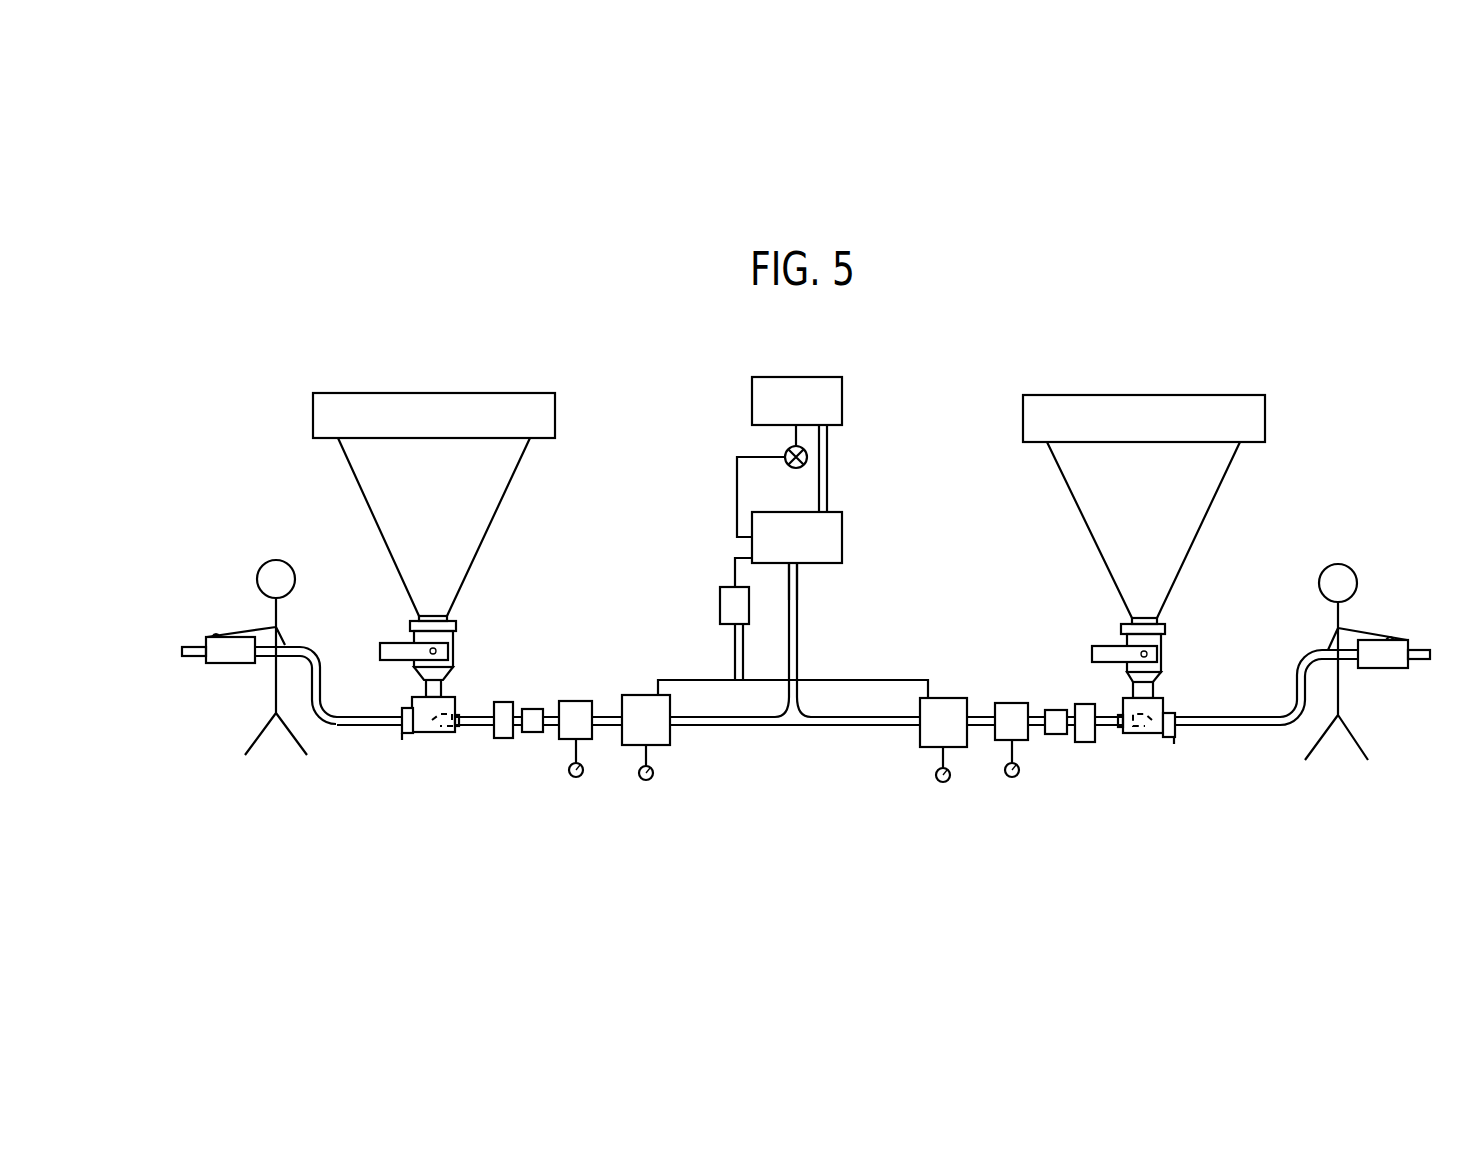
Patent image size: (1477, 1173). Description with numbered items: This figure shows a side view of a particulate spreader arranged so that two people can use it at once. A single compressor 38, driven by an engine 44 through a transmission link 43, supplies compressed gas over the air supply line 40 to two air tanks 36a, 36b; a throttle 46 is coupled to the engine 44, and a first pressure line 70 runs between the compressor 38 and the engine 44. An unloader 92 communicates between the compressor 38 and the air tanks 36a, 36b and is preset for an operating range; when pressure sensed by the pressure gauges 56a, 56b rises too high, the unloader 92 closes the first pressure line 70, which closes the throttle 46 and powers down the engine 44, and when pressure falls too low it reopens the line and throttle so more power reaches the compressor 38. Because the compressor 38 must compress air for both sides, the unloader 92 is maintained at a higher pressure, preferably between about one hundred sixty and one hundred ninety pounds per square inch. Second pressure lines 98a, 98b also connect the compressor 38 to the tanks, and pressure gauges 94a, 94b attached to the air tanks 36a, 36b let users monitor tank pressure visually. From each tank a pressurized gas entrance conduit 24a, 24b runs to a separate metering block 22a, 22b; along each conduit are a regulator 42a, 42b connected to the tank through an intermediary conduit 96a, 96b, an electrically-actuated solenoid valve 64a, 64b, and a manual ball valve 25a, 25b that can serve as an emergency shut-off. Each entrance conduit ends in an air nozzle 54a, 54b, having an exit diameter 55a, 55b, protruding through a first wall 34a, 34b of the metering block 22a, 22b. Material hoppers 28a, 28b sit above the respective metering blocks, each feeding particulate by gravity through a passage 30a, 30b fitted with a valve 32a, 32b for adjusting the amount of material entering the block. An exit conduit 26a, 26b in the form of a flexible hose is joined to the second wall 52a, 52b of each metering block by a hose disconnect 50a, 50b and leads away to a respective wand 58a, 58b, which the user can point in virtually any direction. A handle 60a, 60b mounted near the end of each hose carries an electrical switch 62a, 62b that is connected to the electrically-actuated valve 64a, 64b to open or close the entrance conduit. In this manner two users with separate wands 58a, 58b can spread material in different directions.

The metering block 22a is at (1160, 698).
The metering block 22b is at (430, 698).
The pressurized gas entrance conduit 24a is at (1088, 745).
The pressurized gas entrance conduit 24b is at (503, 740).
The ball valve 25a is at (1057, 734).
The ball valve 25b is at (530, 734).
The exit conduit 26a is at (1178, 736).
The exit conduit 26b is at (399, 733).
The material hopper 28a is at (1187, 538).
The material hopper 28b is at (483, 508).
The passage 30a is at (1162, 645).
The passage 30b is at (457, 637).
The valve 32a is at (1093, 650).
The valve 32b is at (405, 648).
The first wall 34a is at (1125, 700).
The first wall 34b is at (456, 700).
The air tank 36a is at (942, 698).
The air tank 36b is at (647, 695).
The compressor 38 is at (833, 552).
The air supply line 40 is at (797, 613).
The regulator 42a is at (1012, 703).
The regulator 42b is at (575, 700).
The transmission link 43 is at (827, 480).
The engine 44 is at (835, 403).
The throttle 46 is at (785, 452).
The hose disconnect 50a is at (1170, 740).
The hose disconnect 50b is at (403, 745).
The second wall 52a is at (1165, 700).
The second wall 52b is at (418, 700).
The air nozzle 54a is at (1145, 735).
The air nozzle 54b is at (442, 733).
The exit diameter 55a is at (1127, 733).
The exit diameter 55b is at (458, 733).
The pressure gauge 56a is at (1012, 780).
The pressure gauge 56b is at (577, 780).
The wand 58a is at (1425, 660).
The wand 58b is at (185, 657).
The handle 60a is at (1378, 662).
The handle 60b is at (232, 660).
The electrical switch 62a is at (1390, 636).
The electrical switch 62b is at (216, 632).
The electrically-actuated valve 64a is at (1085, 704).
The electrically-actuated valve 64b is at (532, 708).
The first pressure line 70 is at (737, 524).
The unloader 92 is at (720, 603).
The pressure gauge 94a is at (938, 783).
The pressure gauge 94b is at (648, 783).
The intermediary conduit 96a is at (978, 727).
The intermediary conduit 96b is at (608, 727).
The second pressure line 98a is at (853, 678).
The second pressure line 98b is at (735, 655).